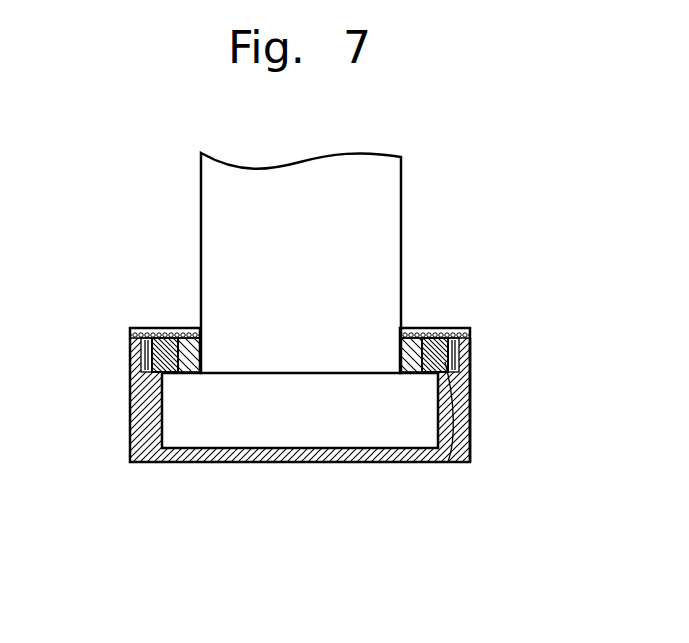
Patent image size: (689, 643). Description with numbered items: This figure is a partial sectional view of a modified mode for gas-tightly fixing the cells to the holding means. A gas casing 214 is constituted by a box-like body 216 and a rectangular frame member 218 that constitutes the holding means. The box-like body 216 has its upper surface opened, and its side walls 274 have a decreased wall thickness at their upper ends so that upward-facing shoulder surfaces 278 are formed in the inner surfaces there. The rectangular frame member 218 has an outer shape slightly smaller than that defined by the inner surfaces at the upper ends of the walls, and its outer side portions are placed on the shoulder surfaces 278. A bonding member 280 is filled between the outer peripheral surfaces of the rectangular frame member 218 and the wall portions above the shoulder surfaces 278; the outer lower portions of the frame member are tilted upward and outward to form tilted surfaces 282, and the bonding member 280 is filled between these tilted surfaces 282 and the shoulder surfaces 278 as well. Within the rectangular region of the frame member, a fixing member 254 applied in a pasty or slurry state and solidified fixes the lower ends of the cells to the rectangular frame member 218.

The gas casing 214 is at (303, 416).
The box-like body 216 is at (471, 379).
The rectangular frame member 218 is at (427, 371).
The fixing member 254 is at (196, 366).
The side walls 274 is at (140, 415).
The shoulder surfaces 278 is at (147, 345).
The bonding member 280 is at (455, 353).
The tilted surfaces 282 is at (448, 462).